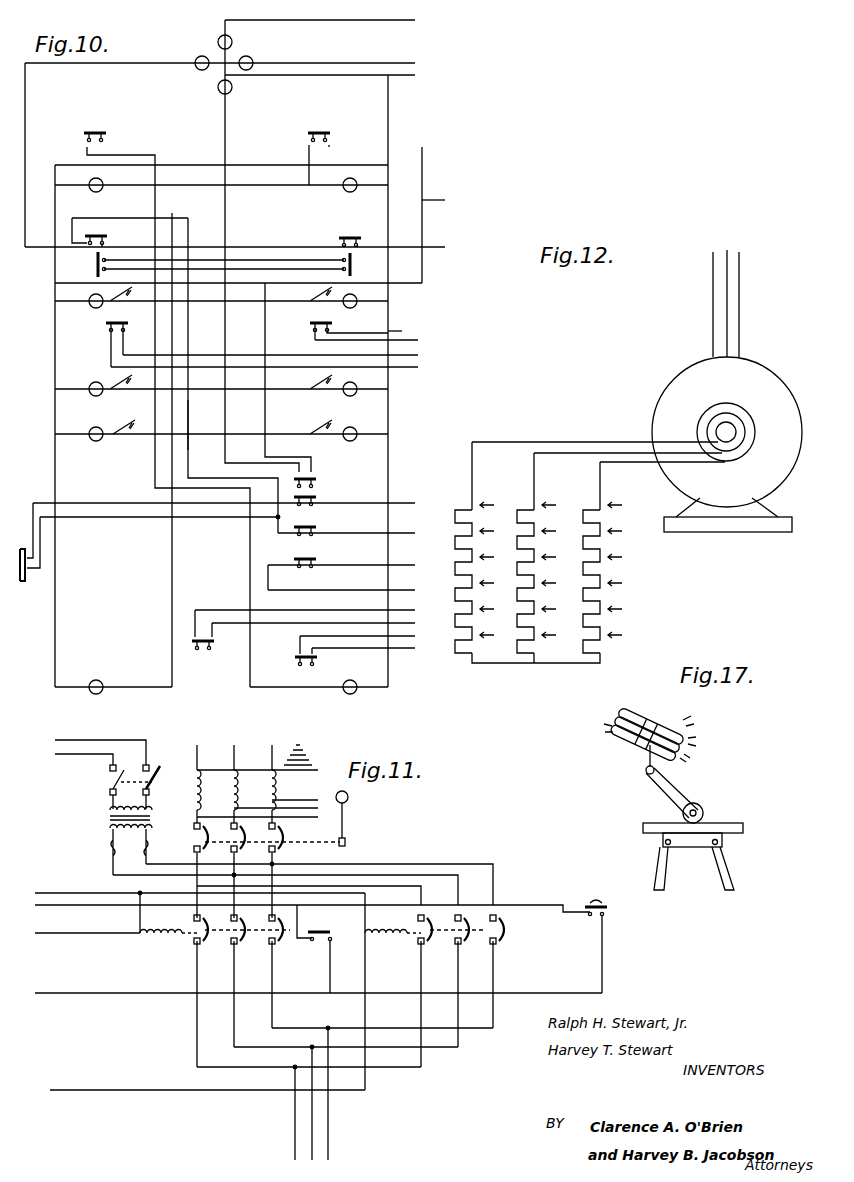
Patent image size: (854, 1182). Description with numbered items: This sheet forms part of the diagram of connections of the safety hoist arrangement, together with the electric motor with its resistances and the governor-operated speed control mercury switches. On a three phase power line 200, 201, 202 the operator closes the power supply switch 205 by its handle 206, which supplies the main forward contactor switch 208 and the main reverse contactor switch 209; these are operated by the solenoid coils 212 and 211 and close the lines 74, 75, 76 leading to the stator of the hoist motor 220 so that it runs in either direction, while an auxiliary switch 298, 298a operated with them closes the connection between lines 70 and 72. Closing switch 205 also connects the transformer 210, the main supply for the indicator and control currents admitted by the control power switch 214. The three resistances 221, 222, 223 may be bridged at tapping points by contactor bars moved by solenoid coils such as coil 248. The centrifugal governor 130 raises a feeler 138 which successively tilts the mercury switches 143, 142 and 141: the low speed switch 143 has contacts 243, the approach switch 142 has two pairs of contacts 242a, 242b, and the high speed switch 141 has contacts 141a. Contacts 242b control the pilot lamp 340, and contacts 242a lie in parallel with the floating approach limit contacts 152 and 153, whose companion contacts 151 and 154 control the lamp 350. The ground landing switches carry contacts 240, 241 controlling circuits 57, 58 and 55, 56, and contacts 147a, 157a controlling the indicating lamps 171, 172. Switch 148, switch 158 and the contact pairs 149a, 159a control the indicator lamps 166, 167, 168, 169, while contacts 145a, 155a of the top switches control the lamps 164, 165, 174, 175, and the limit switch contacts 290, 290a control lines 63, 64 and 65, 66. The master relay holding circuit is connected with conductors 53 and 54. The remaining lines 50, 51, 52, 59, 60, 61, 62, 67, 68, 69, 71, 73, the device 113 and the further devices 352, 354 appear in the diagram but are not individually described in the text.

In FIG. 10, the conductor 50 is at (331, 21).
In FIG. 10, the conductor 51 is at (231, 64).
In FIG. 10, the conductor 52 is at (331, 77).
In FIG. 10, the conductor 53 is at (445, 201).
In FIG. 10, the conductor 54 is at (246, 248).
In FIG. 10, the circuit 55 is at (404, 325).
In FIG. 10, the circuit 56 is at (377, 341).
In FIG. 10, the circuit 57 is at (281, 355).
In FIG. 10, the circuit 58 is at (275, 370).
In FIG. 10, the conductor 59 is at (235, 504).
In FIG. 10, the conductor 60 is at (358, 534).
In FIG. 10, the conductor 61 is at (353, 566).
In FIG. 10, the conductor 62 is at (353, 591).
In FIG. 10, the line 63 is at (316, 609).
In FIG. 10, the line 64 is at (325, 623).
In FIG. 10, the line 65 is at (369, 636).
In FIG. 10, the line 66 is at (375, 651).
In FIG. 11, the conductor 67 is at (88, 749).
In FIG. 11, the conductor 68 is at (71, 757).
In FIG. 11, the conductor 69 is at (195, 893).
In FIG. 11, the line 70 is at (312, 907).
In FIG. 11, the conductor 71 is at (87, 941).
In FIG. 11, the line 72 is at (318, 985).
In FIG. 11, the conductor 73 is at (206, 1080).
In FIG. 12, the supply wire 74 is at (700, 303).
In FIG. 11, the supply wire 74 is at (284, 1117).
In FIG. 12, the supply wire 75 is at (726, 295).
In FIG. 11, the supply wire 75 is at (309, 1113).
In FIG. 12, the supply wire 76 is at (749, 303).
In FIG. 11, the supply wire 76 is at (338, 1098).
In FIG. 10, the solenoid 113 is at (23, 582).
In FIG. 17, the centrifugal governor 130 is at (648, 843).
In FIG. 17, the feeler 138 is at (658, 790).
In FIG. 17, the high speed switch 141 is at (642, 726).
In FIG. 10, the contacts 141a is at (306, 492).
In FIG. 17, the low speed switch 142 is at (647, 734).
In FIG. 17, the low speed switch 143 is at (616, 713).
In FIG. 10, the contacts 145a is at (100, 130).
In FIG. 10, the contacts 147a is at (118, 292).
In FIG. 10, the switch 148 is at (124, 396).
In FIG. 10, the contact pair 149a is at (120, 442).
In FIG. 10, the contacts 151 is at (96, 264).
In FIG. 10, the contacts 152 is at (96, 232).
In FIG. 10, the contacts 153 is at (353, 234).
In FIG. 10, the contacts 154 is at (360, 264).
In FIG. 10, the contacts 155a is at (322, 130).
In FIG. 10, the contacts 157a is at (316, 292).
In FIG. 10, the switch 158 is at (310, 384).
In FIG. 10, the contact pair 159a is at (318, 424).
In FIG. 10, the lamp 164 is at (96, 680).
In FIG. 10, the lamp 165 is at (356, 692).
In FIG. 10, the indicator lamp 166 is at (92, 382).
In FIG. 10, the indicator lamp 167 is at (356, 384).
In FIG. 10, the indicator lamp 168 is at (92, 427).
In FIG. 10, the indicator lamp 169 is at (356, 429).
In FIG. 10, the indicating lamp 171 is at (92, 307).
In FIG. 10, the indicating lamp 172 is at (355, 296).
In FIG. 10, the lamp 174 is at (92, 192).
In FIG. 10, the lamp 175 is at (345, 190).
In FIG. 11, the three phase power line 200 is at (193, 775).
In FIG. 11, the three phase power line 201 is at (235, 775).
In FIG. 11, the three phase power line 202 is at (271, 775).
In FIG. 11, the power supply switch 205 is at (285, 840).
In FIG. 11, the handle 206 is at (347, 823).
In FIG. 11, the main forward contactor switch 208 is at (242, 941).
In FIG. 11, the main reverse contactor switch 209 is at (479, 940).
In FIG. 11, the transformer 210 is at (100, 818).
In FIG. 11, the solenoid coil 211 is at (383, 937).
In FIG. 11, the solenoid coil 212 is at (150, 937).
In FIG. 11, the control power switch 214 is at (96, 791).
In FIG. 12, the electric motor 220 is at (656, 404).
In FIG. 12, the resistance 221 is at (476, 559).
In FIG. 12, the resistance 222 is at (538, 534).
In FIG. 12, the resistance 223 is at (604, 534).
In FIG. 10, the contacts 240 is at (108, 326).
In FIG. 10, the contacts 241 is at (333, 320).
In FIG. 17, the contacts 241 is at (688, 760).
In FIG. 10, the contacts 242a is at (308, 522).
In FIG. 17, the contacts 242a is at (696, 742).
In FIG. 10, the contacts 242b is at (312, 472).
In FIG. 17, the contacts 242b is at (604, 730).
In FIG. 10, the contacts 243 is at (308, 554).
In FIG. 17, the contacts 243 is at (694, 722).
In FIG. 10, the solenoid coil 248 is at (189, 414).
In FIG. 10, the contacts 290 is at (203, 650).
In FIG. 10, the contacts 290a is at (306, 666).
In FIG. 11, the auxiliary switch 298 is at (318, 930).
In FIG. 11, the auxiliary switch 298a is at (608, 908).
In FIG. 10, the pilot lamp 340 is at (229, 93).
In FIG. 10, the lamp 350 is at (197, 57).
In FIG. 10, the relay 352 is at (252, 58).
In FIG. 10, the relay 354 is at (232, 40).